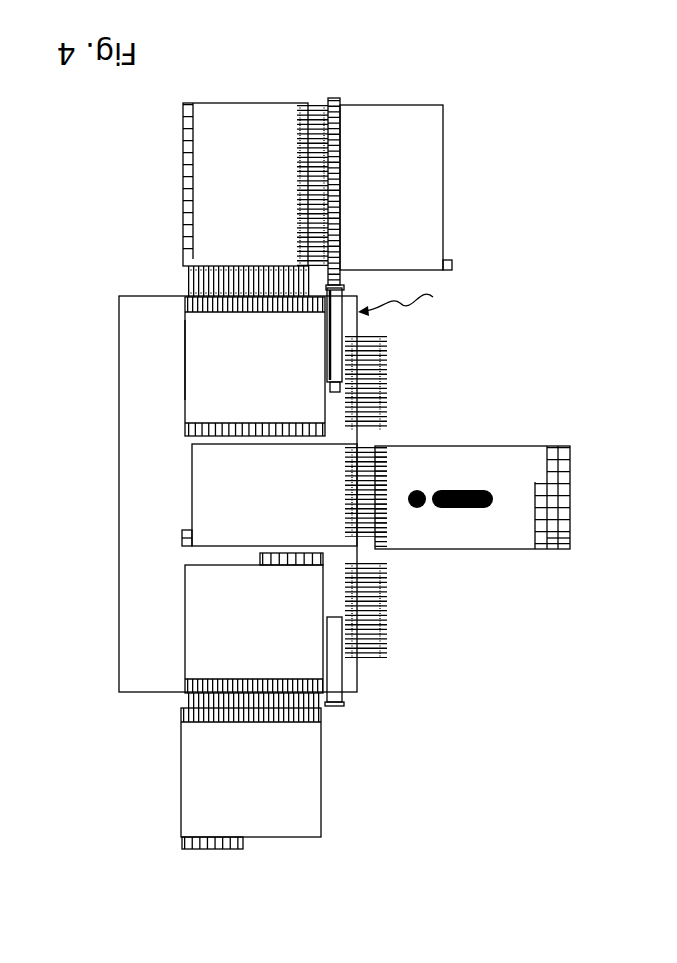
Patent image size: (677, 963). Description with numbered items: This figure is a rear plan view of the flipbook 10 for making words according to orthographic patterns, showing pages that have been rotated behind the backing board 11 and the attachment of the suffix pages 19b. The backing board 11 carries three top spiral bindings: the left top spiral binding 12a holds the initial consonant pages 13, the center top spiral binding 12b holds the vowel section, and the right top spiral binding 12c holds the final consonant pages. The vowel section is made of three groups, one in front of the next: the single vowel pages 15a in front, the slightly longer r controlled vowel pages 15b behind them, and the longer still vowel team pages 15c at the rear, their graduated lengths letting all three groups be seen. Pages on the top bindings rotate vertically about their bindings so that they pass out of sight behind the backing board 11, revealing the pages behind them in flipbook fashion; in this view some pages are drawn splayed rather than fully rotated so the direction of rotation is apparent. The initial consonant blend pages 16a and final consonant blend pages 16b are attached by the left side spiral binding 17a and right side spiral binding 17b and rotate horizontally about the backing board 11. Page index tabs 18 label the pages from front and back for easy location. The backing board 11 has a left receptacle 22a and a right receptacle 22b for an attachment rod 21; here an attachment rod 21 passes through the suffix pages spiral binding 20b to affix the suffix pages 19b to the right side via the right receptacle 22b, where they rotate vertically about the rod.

The flipbook assembly 10 is at (403, 300).
The backing board 11 is at (119, 296).
The left top spiral binding 12a is at (428, 645).
The center top spiral binding 12b is at (431, 563).
The right top spiral binding 12c is at (432, 360).
The initial consonant pages 13 is at (190, 617).
The single vowel pages 15a is at (622, 462).
The r controlled vowel pages 15b is at (621, 505).
The vowel team pages 15c is at (622, 572).
The initial consonant blend pages 16a is at (166, 843).
The final consonant blend pages 16b is at (185, 355).
The left side spiral binding 17a is at (338, 755).
The right side spiral binding 17b is at (176, 328).
The page index tabs 18 is at (166, 888).
The suffix pages 19b is at (460, 138).
The suffix pages spiral binding 20b is at (334, 98).
The attachment rod 21 is at (333, 418).
The left receptacle for attachment rod 22a is at (358, 720).
The right receptacle for attachment rod 22b is at (326, 373).